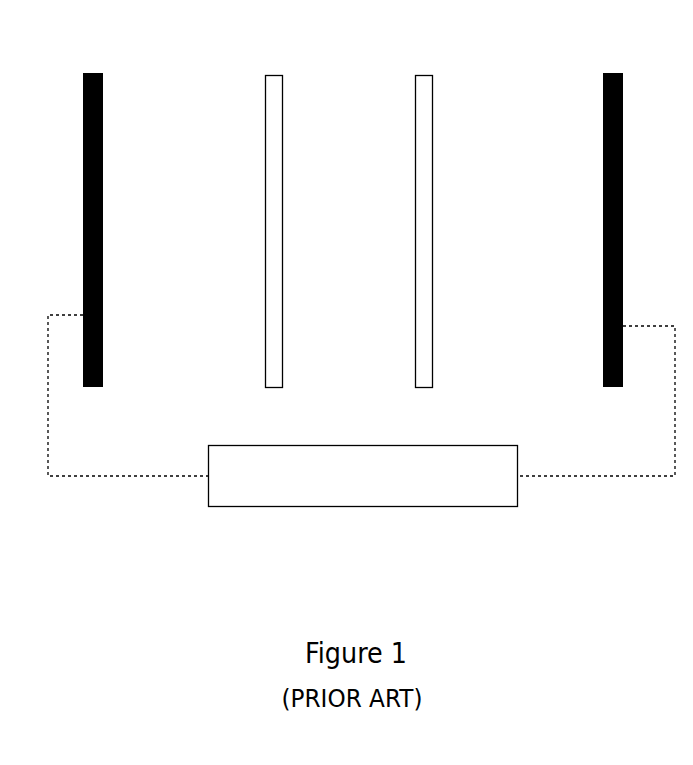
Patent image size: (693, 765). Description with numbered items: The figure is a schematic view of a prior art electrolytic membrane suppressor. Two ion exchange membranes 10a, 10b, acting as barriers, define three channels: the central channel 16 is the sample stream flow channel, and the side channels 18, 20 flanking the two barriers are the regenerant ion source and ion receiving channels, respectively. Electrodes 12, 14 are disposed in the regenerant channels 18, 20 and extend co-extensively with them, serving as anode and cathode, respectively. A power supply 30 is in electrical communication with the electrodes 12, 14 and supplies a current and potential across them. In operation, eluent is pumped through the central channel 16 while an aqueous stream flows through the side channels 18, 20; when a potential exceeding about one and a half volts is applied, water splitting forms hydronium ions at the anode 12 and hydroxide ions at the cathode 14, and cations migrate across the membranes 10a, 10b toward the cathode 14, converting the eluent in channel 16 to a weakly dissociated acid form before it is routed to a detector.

The electrode (anode) 12 is at (94, 205).
The electrode (cathode) 14 is at (606, 205).
The ion exchange membrane 10a is at (279, 207).
The ion exchange membrane 10b is at (428, 207).
The central channel 16 is at (367, 237).
The side channel 18 is at (196, 237).
The side channel 20 is at (531, 236).
The power supply 30 is at (338, 506).